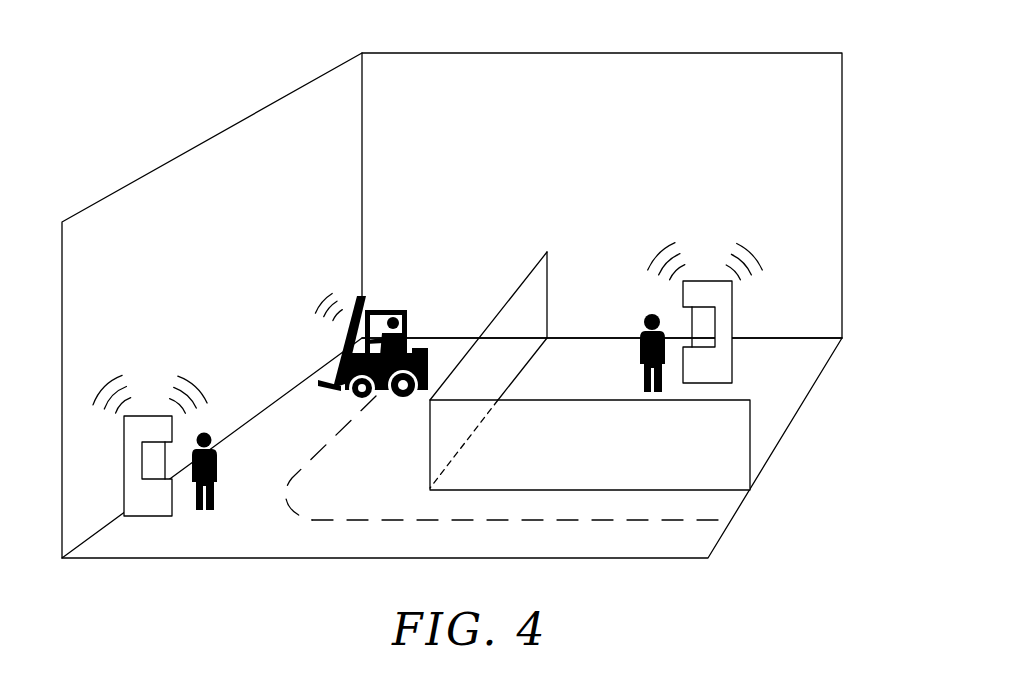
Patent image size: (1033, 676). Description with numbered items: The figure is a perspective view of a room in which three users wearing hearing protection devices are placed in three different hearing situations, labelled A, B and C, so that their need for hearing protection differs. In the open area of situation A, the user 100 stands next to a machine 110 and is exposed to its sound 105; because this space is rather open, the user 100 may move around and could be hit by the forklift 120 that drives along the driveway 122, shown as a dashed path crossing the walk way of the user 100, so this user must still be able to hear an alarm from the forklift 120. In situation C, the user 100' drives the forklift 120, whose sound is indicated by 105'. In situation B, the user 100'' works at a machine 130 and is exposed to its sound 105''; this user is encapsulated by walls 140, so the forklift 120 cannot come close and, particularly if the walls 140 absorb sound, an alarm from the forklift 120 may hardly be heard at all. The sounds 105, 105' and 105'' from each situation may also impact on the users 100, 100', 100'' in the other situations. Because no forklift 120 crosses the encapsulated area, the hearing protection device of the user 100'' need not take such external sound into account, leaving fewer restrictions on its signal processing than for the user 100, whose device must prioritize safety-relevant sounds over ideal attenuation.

The user 100 is at (231, 488).
The user 100' is at (446, 311).
The user 100'' is at (619, 323).
The sound 105 is at (200, 364).
The sound 105' is at (322, 267).
The sound 105'' is at (766, 236).
The machine 110 is at (148, 416).
The forklift 120 is at (378, 310).
The driveway 122 is at (310, 517).
The machine 130 is at (733, 311).
The walls 140 is at (527, 297).